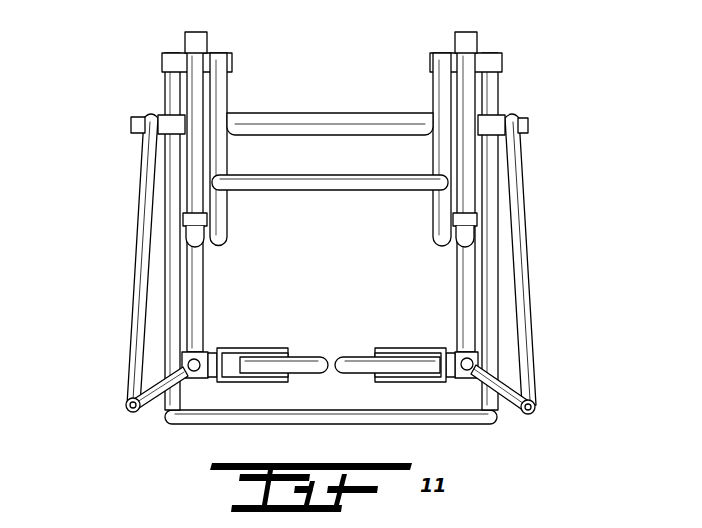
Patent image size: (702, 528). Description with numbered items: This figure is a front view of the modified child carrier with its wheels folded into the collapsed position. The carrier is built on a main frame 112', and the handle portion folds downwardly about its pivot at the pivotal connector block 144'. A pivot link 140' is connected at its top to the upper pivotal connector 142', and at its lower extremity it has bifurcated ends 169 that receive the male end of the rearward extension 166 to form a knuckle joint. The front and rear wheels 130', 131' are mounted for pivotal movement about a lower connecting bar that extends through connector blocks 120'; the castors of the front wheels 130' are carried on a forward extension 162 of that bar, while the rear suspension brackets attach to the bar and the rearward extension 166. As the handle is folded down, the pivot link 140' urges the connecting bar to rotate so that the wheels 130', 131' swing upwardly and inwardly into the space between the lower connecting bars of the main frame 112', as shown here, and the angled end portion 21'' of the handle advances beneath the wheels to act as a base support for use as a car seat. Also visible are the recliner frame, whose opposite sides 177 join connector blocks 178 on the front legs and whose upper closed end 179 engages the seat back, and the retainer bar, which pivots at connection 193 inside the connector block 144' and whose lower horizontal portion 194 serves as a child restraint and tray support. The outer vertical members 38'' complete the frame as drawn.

The angled end portion 21'' is at (333, 433).
The pivot link 140' is at (328, 259).
The outer vertical rod 38'' is at (375, 231).
The pivotal connector block 144' is at (291, 64).
The upper pivotal connector 142' is at (316, 77).
The main frame 112' is at (298, 186).
The pivotal connection 193 is at (207, 52).
The opposite sides of recliner frame 177 is at (221, 220).
The connector block 178 is at (440, 226).
The upper closed end 179 is at (306, 118).
The lower horizontally extending portion 194 is at (333, 190).
The forward extension of connecting bar 162 is at (185, 353).
The rearward extension 166 is at (156, 398).
The bifurcated ends 169 is at (126, 405).
The connector block 120' is at (329, 401).
The rear wheel 131' is at (331, 348).
The front wheel 130' is at (340, 343).